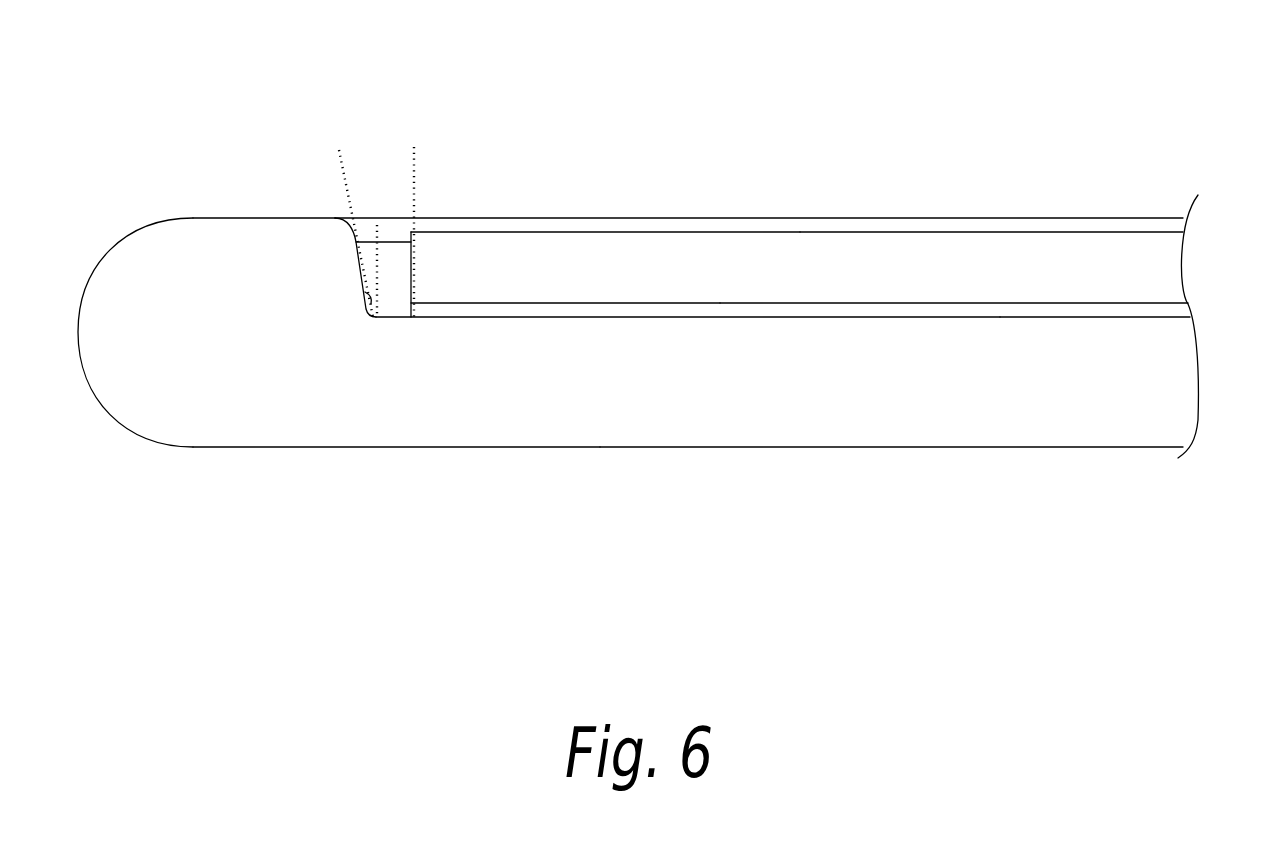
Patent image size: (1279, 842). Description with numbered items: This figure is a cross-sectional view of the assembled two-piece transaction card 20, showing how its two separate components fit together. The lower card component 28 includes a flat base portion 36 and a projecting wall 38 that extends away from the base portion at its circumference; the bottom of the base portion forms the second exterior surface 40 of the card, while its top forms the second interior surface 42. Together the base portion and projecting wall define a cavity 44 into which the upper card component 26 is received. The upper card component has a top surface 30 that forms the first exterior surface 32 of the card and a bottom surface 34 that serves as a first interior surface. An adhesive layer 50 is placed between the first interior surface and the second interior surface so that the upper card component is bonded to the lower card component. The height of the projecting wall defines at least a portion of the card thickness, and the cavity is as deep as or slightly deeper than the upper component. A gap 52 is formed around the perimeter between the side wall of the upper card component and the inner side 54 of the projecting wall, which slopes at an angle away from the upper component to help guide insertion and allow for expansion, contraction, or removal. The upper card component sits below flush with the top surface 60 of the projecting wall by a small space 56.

The transaction card 20 is at (235, 86).
The upper card component 26 is at (575, 247).
The lower card component 28 is at (200, 447).
The top surface 30 is at (1157, 262).
The first exterior surface 32 is at (798, 228).
The bottom surface 34 is at (1190, 302).
The base portion 36 is at (1182, 415).
The projecting wall 38 is at (178, 242).
The second exterior surface 40 is at (797, 447).
The second interior surface 42 is at (1188, 317).
The cavity 44 is at (672, 312).
The adhesive layer 50 is at (805, 308).
The gap 52 is at (392, 250).
The tapered wall 54 is at (362, 281).
The space 56 is at (645, 223).
The top surface 60 is at (265, 215).